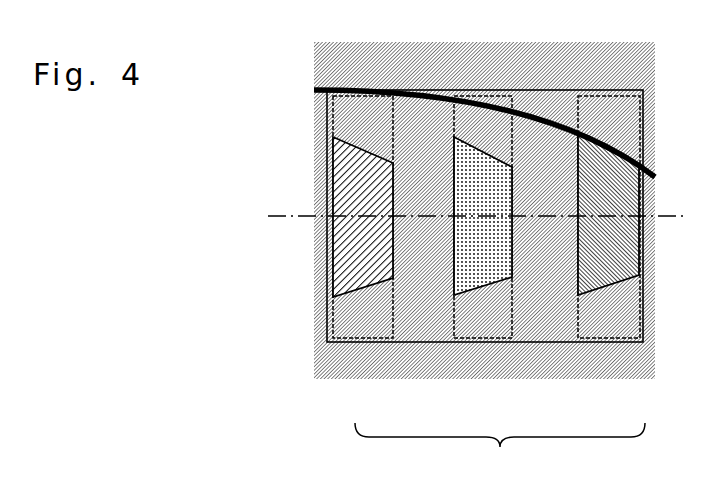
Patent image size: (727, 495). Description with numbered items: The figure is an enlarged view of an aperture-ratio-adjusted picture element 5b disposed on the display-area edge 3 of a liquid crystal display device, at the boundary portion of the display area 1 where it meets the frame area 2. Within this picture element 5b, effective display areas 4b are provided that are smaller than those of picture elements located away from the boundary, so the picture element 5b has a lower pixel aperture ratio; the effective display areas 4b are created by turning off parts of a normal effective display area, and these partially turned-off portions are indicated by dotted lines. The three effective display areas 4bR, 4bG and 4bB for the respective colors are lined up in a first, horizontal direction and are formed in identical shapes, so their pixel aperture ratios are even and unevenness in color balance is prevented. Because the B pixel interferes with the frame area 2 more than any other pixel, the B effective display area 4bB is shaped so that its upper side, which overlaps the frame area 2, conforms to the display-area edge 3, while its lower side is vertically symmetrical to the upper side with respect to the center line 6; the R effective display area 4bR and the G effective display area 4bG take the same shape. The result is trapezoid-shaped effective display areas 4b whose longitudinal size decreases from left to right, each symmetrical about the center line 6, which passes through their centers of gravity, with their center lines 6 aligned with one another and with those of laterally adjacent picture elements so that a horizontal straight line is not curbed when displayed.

The display area 1 is at (645, 362).
The frame area 2 is at (643, 61).
The display-area edge 3 is at (655, 176).
The effective display areas 4b is at (500, 449).
The R effective display area 4bR is at (370, 281).
The G effective display area 4bG is at (485, 279).
The B effective display area 4bB is at (607, 282).
The aperture-ratio-adjusted picture element 5b is at (333, 290).
The center line 6 is at (277, 212).